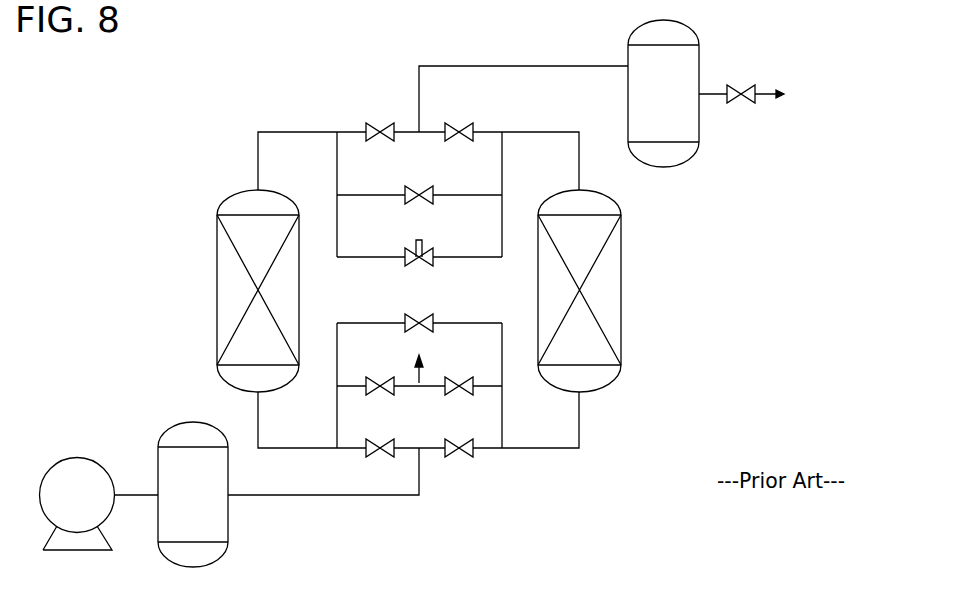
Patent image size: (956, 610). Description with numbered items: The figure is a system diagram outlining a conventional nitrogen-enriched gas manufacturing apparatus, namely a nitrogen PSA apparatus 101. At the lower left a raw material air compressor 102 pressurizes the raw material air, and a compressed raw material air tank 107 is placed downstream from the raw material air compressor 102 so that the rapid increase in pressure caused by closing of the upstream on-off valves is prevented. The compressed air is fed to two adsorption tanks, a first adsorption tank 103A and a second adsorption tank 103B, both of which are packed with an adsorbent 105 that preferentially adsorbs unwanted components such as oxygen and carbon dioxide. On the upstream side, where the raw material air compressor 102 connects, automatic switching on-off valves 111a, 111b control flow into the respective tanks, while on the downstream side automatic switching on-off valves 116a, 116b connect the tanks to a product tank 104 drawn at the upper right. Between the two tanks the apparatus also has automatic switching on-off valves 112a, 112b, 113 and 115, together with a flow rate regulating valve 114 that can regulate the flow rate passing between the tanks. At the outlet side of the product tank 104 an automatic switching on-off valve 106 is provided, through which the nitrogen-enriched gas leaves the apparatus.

The nitrogen PSA apparatus 101 is at (114, 133).
The raw material air compressor 102 is at (80, 470).
The first adsorption tank 103A is at (208, 244).
The second adsorption tank 103B is at (633, 244).
The product tank 104 is at (690, 118).
The adsorbent 105 is at (226, 306).
The automatic switching on-off valve 106 is at (740, 85).
The compressed raw material air tank 107 is at (217, 520).
The automatic switching on-off valve 111a is at (375, 440).
The automatic switching on-off valve 111b is at (459, 440).
The automatic switching on-off valve 112a is at (375, 378).
The automatic switching on-off valve 112b is at (463, 378).
The automatic switching on-off valve 113 is at (419, 314).
The flow rate regulating valve 114 is at (423, 250).
The automatic switching on-off valve 115 is at (419, 187).
The automatic switching on-off valve 116a is at (375, 125).
The automatic switching on-off valve 116b is at (463, 125).